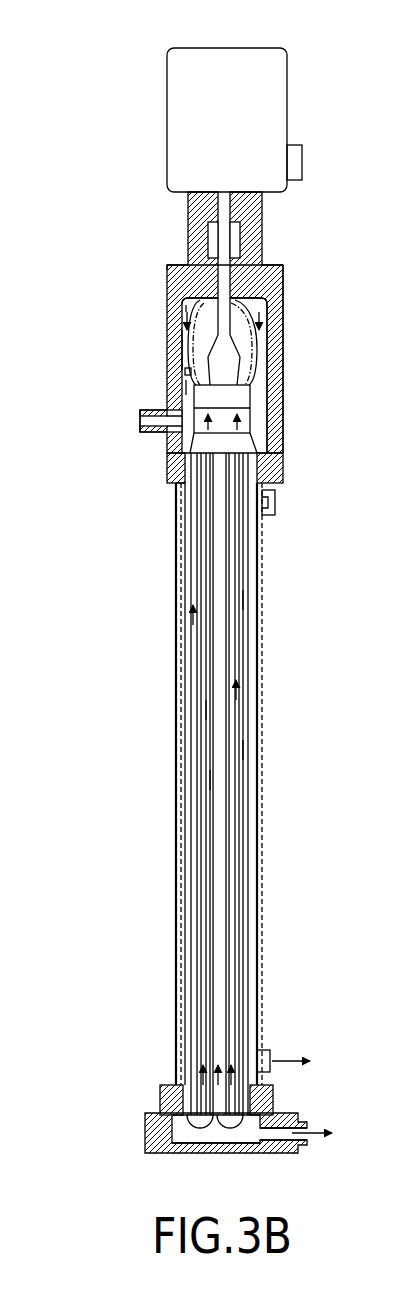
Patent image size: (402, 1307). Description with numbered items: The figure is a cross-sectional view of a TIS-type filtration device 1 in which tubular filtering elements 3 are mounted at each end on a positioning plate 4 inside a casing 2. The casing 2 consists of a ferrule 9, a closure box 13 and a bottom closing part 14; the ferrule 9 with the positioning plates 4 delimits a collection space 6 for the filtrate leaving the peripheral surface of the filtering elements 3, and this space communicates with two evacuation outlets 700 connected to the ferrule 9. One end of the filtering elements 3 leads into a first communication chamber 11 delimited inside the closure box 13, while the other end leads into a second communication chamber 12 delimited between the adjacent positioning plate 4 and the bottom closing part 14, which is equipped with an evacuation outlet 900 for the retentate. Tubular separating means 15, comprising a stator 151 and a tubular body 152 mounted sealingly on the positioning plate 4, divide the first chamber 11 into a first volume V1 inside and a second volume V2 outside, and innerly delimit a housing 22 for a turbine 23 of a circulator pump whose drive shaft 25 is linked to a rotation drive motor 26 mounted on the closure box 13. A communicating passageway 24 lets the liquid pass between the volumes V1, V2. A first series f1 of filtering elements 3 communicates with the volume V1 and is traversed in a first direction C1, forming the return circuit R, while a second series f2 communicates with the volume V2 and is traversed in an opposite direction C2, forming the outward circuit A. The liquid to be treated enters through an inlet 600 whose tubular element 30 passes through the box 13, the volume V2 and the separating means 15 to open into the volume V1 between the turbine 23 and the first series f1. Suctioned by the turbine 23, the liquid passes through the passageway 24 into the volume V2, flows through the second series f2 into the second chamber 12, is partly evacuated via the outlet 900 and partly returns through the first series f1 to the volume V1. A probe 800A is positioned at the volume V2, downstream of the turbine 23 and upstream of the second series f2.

The filtration device 1 is at (148, 285).
The casing 2 is at (178, 620).
The filtering elements 3 is at (248, 668).
The positioning plate 4 is at (273, 465).
The collection space 6 is at (256, 817).
The ferrule 9 is at (177, 883).
The first communication chamber 11 is at (280, 317).
The second communication chamber 12 is at (183, 1128).
The closure box 13 is at (273, 267).
The bottom closing part 14 is at (218, 1152).
The separating means 15 is at (269, 347).
The housing 22 is at (184, 296).
The turbine 23 is at (222, 362).
The communicating passageway 24 is at (250, 297).
The drive shaft 25 is at (263, 220).
The rotation drive motor 26 is at (294, 62).
The tubular element 30 is at (152, 434).
The stator 151 is at (256, 397).
The tubular body 152 is at (258, 430).
The inlet 600 is at (130, 423).
The evacuation outlet 700 is at (275, 516).
The probe 800A is at (186, 358).
The evacuation outlet 900 is at (302, 1147).
The first volume V1 is at (168, 395).
The second volume V2 is at (173, 332).
The first direction C1 is at (206, 708).
The second direction C2 is at (248, 597).
The first series f1 is at (208, 778).
The second series f2 is at (243, 752).
The return circuit R is at (100, 771).
The outward circuit A is at (350, 738).